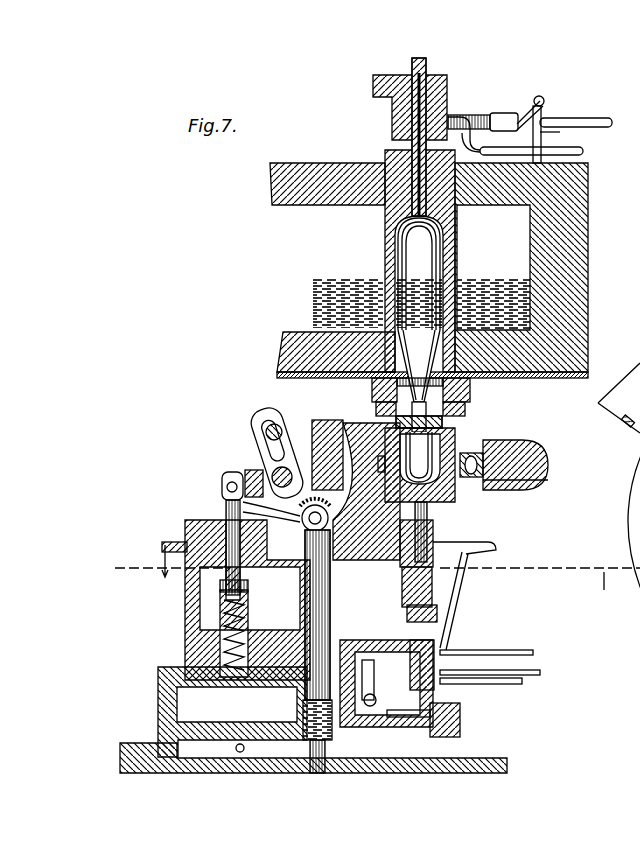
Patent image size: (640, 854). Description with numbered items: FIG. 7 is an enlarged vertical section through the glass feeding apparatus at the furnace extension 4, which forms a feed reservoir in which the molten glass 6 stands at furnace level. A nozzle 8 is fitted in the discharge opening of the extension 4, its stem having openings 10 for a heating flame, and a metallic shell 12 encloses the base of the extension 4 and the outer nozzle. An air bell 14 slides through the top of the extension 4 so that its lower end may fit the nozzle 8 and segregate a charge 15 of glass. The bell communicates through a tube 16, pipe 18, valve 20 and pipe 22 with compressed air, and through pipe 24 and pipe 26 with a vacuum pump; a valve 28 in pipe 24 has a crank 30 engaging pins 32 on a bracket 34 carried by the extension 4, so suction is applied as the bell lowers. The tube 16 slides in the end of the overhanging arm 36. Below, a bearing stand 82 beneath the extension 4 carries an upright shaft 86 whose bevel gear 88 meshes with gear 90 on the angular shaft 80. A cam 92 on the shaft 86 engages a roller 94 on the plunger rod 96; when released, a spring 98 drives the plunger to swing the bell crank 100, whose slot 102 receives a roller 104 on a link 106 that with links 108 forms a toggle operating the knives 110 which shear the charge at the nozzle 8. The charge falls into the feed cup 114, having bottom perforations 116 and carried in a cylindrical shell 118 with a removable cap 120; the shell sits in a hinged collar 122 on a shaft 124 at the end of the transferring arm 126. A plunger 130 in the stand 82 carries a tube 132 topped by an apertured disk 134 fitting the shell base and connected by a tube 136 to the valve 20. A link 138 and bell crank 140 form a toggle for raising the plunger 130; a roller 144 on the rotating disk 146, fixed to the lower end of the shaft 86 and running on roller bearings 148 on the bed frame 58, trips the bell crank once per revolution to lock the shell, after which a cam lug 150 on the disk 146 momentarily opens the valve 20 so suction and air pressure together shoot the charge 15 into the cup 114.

The extension 4 is at (305, 183).
The molten glass 6 is at (312, 292).
The nozzle 8 is at (470, 392).
The openings 10 is at (456, 446).
The metallic shell 12 is at (270, 446).
The air bell 14 is at (448, 231).
The charge 15 is at (455, 272).
The tube 16 is at (428, 62).
The pipe 18 is at (540, 674).
The valve 20 is at (378, 700).
The pipe 22 is at (523, 682).
The pipe 24 is at (570, 118).
The pipe 26 is at (534, 654).
The valve 28 is at (502, 113).
The crank 30 is at (542, 98).
The pins 32 is at (537, 106).
The bracket 34 is at (560, 132).
The arm 36 is at (392, 112).
The bed frame 58 is at (170, 765).
The shaft 80 is at (232, 460).
The bearing stand 82 is at (200, 648).
The shaft 86 is at (180, 690).
The bevel gear 88 is at (234, 512).
The gear 90 is at (224, 490).
The cam 92 is at (230, 574).
The roller 94 is at (250, 580).
The plunger rod 96 is at (225, 604).
The spring 98 is at (260, 640).
The bell crank 100 is at (256, 470).
The slot 102 is at (272, 462).
The roller 104 is at (266, 416).
The link 106 is at (266, 424).
The links 108 is at (318, 440).
The knives 110 is at (370, 424).
The feed cup 114 is at (546, 446).
The bottom perforations 116 is at (432, 506).
The cylindrical shell 118 is at (432, 526).
The removable cap 120 is at (452, 432).
The hinged collar 122 is at (540, 481).
The shaft 124 is at (540, 466).
The transferring arm 126 is at (540, 422).
The plunger 130 is at (440, 596).
The tube 132 is at (433, 537).
The apertured disk 134 is at (440, 548).
The tube 136 is at (445, 578).
The link 138 is at (470, 630).
The bell crank 140 is at (500, 632).
The roller 144 is at (455, 712).
The rotating disk 146 is at (268, 726).
The roller bearings 148 is at (238, 752).
The cam lug 150 is at (410, 725).